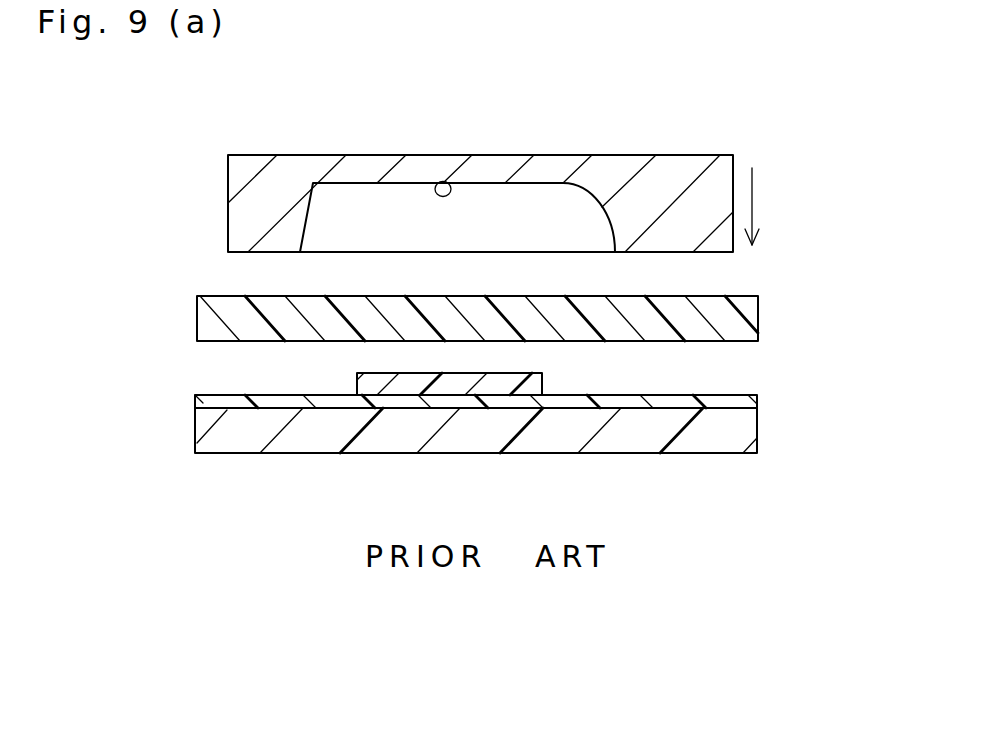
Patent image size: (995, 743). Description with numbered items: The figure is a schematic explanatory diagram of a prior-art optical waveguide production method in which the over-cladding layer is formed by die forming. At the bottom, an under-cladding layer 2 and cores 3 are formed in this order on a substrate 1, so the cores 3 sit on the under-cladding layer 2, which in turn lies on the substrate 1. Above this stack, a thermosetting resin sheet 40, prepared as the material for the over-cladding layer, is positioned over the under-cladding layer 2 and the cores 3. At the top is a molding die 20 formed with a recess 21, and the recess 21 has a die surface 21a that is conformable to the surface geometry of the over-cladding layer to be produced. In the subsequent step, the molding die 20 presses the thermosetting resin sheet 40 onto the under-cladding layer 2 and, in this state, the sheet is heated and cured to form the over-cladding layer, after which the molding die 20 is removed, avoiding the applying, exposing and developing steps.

The substrate 1 is at (755, 437).
The under-cladding layer 2 is at (748, 398).
The cores 3 is at (535, 388).
The molding die 20 is at (250, 145).
The recess 21 is at (362, 197).
The die surface 21a is at (445, 182).
The thermosetting resin sheet 40 is at (737, 324).